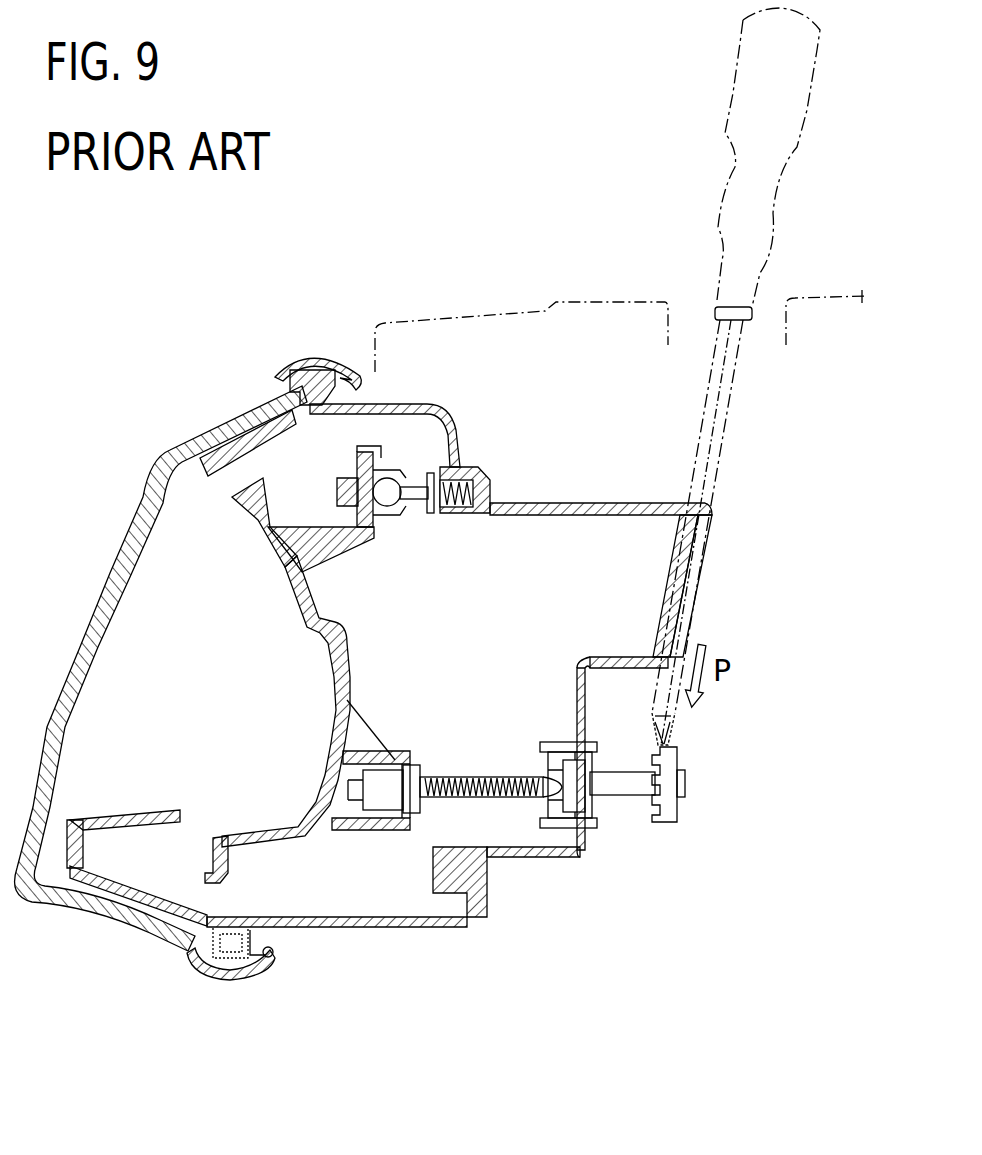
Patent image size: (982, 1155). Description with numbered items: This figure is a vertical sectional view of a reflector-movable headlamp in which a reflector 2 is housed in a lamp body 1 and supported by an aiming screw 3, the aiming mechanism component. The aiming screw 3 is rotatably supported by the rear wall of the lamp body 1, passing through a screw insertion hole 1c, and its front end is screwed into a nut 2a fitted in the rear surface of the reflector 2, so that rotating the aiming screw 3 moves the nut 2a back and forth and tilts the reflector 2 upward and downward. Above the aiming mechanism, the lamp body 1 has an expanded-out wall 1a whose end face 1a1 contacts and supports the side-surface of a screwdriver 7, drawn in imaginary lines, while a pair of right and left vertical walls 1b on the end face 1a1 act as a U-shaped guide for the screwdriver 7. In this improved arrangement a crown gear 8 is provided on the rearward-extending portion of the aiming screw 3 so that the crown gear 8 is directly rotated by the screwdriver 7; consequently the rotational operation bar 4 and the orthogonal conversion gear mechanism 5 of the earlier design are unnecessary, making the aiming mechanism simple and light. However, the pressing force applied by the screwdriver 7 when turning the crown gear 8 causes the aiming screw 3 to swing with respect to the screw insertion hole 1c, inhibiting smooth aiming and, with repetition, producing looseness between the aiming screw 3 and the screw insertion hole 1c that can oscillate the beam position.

The lamp body 1 is at (432, 405).
The expanded-out wall 1a is at (633, 494).
The end face of the expanded-out wall 1a1 is at (683, 563).
The vertical walls 1b is at (693, 620).
The screw insertion hole 1c is at (543, 777).
The reflector 2 is at (350, 640).
The nut 2a is at (380, 797).
The aiming screw 3 is at (500, 793).
The rotational operation bar 4 is at (673, 720).
The orthogonal conversion gear mechanism 5 is at (613, 797).
The screwdriver 7 is at (773, 206).
The crown gear 8 is at (660, 820).